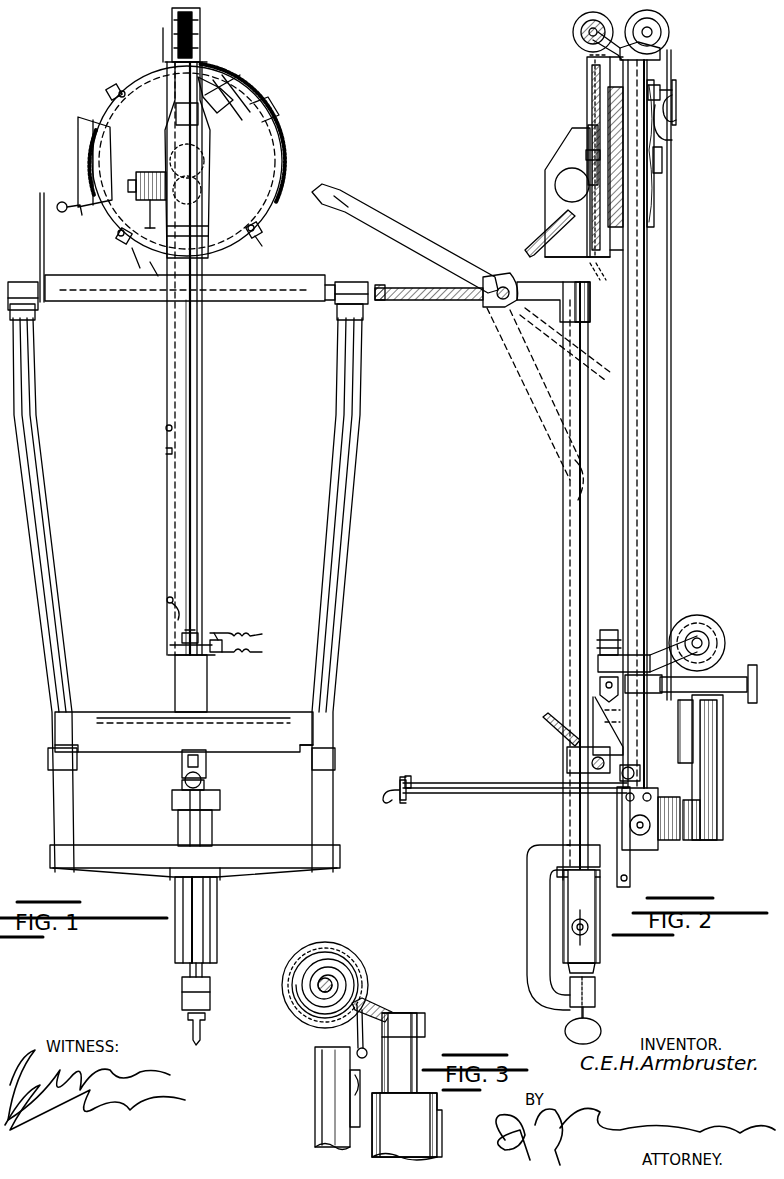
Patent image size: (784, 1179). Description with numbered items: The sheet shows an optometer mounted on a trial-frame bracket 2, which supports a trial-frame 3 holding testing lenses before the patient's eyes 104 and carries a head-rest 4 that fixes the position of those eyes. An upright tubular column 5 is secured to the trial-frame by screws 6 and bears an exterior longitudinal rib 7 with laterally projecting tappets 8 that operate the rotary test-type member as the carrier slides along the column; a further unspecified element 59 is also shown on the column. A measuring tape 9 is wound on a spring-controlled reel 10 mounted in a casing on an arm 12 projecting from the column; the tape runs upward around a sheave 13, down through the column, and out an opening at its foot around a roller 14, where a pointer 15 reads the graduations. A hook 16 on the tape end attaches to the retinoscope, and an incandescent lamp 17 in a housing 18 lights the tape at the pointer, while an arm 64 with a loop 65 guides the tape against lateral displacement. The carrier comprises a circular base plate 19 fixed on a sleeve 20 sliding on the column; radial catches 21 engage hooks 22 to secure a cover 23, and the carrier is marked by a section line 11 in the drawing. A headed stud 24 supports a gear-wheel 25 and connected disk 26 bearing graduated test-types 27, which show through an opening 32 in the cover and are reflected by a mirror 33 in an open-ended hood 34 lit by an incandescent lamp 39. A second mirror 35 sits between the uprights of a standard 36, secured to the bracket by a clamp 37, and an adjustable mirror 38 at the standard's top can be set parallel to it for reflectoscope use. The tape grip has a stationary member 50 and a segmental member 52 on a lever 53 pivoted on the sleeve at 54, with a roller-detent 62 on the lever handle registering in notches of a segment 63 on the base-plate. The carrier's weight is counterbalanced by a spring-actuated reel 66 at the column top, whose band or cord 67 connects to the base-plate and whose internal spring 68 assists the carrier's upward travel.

In FIG. 1, the bracket 2 is at (177, 538).
In FIG. 2, the bracket 2 is at (622, 905).
In FIG. 2, the trial-frame 3 is at (723, 820).
In FIG. 2, the head-rest 4 is at (752, 676).
In FIG. 1, the tubular column 5 is at (204, 530).
In FIG. 2, the tubular column 5 is at (648, 472).
In FIG. 3, the tubular column 5 is at (420, 1050).
In FIG. 2, the screws 6 is at (650, 802).
In FIG. 1, the rib 7 is at (167, 534).
In FIG. 1, the tappets 8 is at (166, 428).
In FIG. 2, the measuring tape 9 is at (672, 372).
In FIG. 2, the spring-controlled reel 10 is at (705, 618).
In FIG. 2, the section line 11 is at (590, 52).
In FIG. 2, the arm 12 is at (710, 660).
In FIG. 2, the sheave 13 is at (673, 32).
In FIG. 1, the roller 14 is at (183, 773).
In FIG. 2, the roller 14 is at (567, 762).
In FIG. 1, the pointer 15 is at (206, 760).
In FIG. 1, the hook 16 is at (214, 800).
In FIG. 2, the hook 16 is at (386, 803).
In FIG. 2, the incandescent lamp 17 is at (600, 680).
In FIG. 1, the housing 18 is at (208, 685).
In FIG. 2, the housing 18 is at (595, 700).
In FIG. 2, the base plate 19 is at (624, 250).
In FIG. 3, the base plate 19 is at (352, 1105).
In FIG. 2, the sleeve 20 is at (655, 205).
In FIG. 3, the sleeve 20 is at (438, 1120).
In FIG. 1, the catches 21 is at (262, 242).
In FIG. 1, the hooks 22 is at (262, 230).
In FIG. 1, the cover 23 is at (245, 152).
In FIG. 2, the cover 23 is at (587, 70).
In FIG. 3, the cover 23 is at (315, 1087).
In FIG. 2, the headed stud 24 is at (572, 130).
In FIG. 2, the gear-wheel 25 is at (608, 125).
In FIG. 1, the disk 26 is at (276, 102).
In FIG. 2, the disk 26 is at (592, 86).
In FIG. 1, the test-types 27 is at (206, 84).
In FIG. 1, the opening 32 is at (232, 98).
In FIG. 2, the mirror 33 is at (530, 240).
In FIG. 1, the hood 34 is at (213, 196).
In FIG. 2, the hood 34 is at (586, 155).
In FIG. 1, the second mirror 35 is at (255, 718).
In FIG. 2, the second mirror 35 is at (543, 718).
In FIG. 1, the standard 36 is at (56, 584).
In FIG. 1, the clamp 37 is at (202, 912).
In FIG. 2, the clamp 37 is at (527, 870).
In FIG. 1, the adjustable mirror 38 is at (250, 303).
In FIG. 2, the adjustable mirror 38 is at (438, 300).
In FIG. 2, the incandescent lamp 39 is at (555, 185).
In FIG. 2, the stationary member 50 is at (656, 82).
In FIG. 2, the segmental member 52 is at (677, 90).
In FIG. 1, the lever 53 is at (60, 212).
In FIG. 2, the lever 53 is at (662, 140).
In FIG. 2, the pivot 54 is at (663, 160).
In FIG. 1, the spring 59 is at (168, 450).
In FIG. 1, the roller-detent 62 is at (66, 213).
In FIG. 1, the segment 63 is at (78, 160).
In FIG. 2, the arm 64 is at (490, 793).
In FIG. 1, the loop 65 is at (183, 782).
In FIG. 2, the loop 65 is at (410, 776).
In FIG. 1, the counterbalancing reel 66 is at (172, 42).
In FIG. 2, the counterbalancing reel 66 is at (574, 32).
In FIG. 3, the counterbalancing reel 66 is at (360, 963).
In FIG. 2, the band or cord 67 is at (590, 58).
In FIG. 3, the band or cord 67 is at (375, 1008).
In FIG. 3, the spring 68 is at (330, 965).
In FIG. 2, the patient's eyes 104 is at (726, 767).